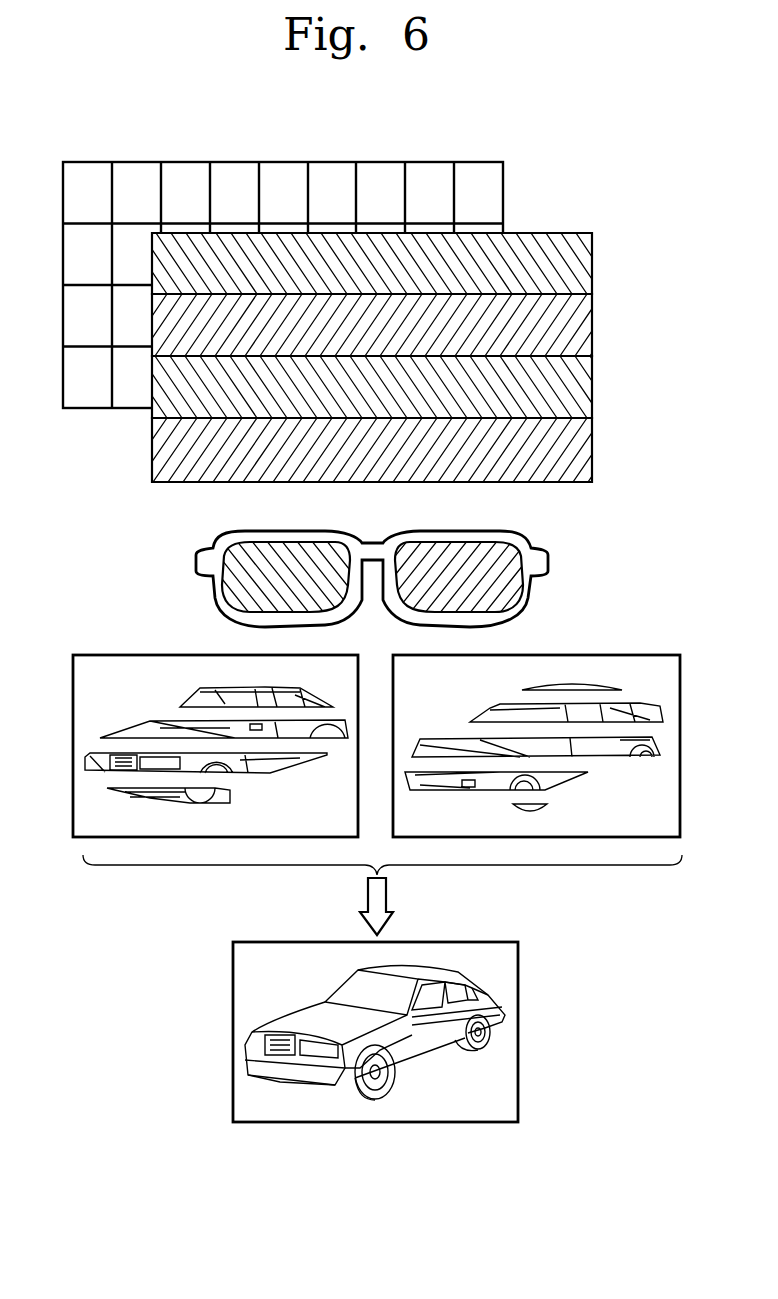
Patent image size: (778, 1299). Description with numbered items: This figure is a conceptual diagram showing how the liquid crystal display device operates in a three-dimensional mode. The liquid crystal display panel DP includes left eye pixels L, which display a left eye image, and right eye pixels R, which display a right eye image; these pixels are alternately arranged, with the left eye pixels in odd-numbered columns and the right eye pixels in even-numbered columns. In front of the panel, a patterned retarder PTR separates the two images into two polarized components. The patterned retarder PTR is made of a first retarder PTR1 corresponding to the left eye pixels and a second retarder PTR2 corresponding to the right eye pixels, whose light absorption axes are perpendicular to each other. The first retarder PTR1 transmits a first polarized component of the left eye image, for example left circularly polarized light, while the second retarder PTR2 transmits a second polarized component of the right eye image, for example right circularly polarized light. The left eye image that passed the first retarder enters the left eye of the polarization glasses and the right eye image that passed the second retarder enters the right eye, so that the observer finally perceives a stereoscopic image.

The liquid crystal display panel DP is at (505, 192).
The patterned retarder PTR is at (394, 351).
The first retarder PTR1 is at (622, 389).
The second retarder PTR2 is at (622, 451).